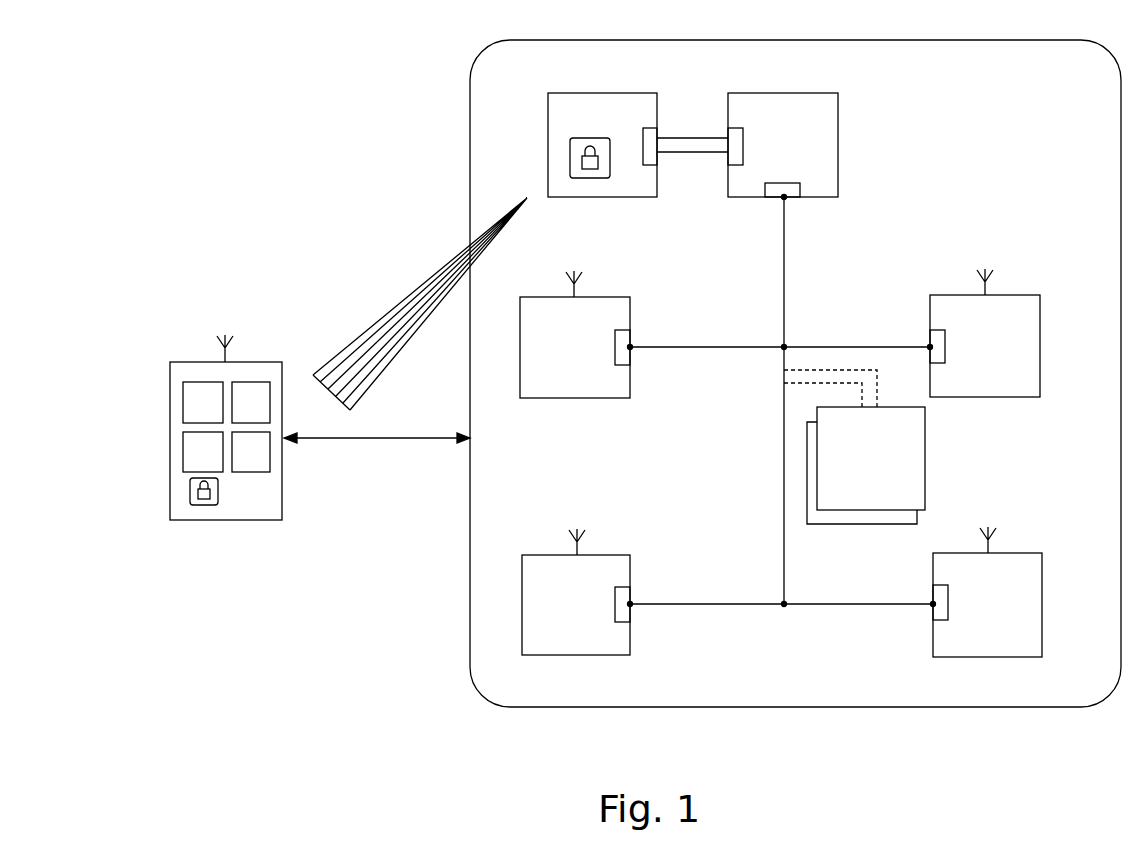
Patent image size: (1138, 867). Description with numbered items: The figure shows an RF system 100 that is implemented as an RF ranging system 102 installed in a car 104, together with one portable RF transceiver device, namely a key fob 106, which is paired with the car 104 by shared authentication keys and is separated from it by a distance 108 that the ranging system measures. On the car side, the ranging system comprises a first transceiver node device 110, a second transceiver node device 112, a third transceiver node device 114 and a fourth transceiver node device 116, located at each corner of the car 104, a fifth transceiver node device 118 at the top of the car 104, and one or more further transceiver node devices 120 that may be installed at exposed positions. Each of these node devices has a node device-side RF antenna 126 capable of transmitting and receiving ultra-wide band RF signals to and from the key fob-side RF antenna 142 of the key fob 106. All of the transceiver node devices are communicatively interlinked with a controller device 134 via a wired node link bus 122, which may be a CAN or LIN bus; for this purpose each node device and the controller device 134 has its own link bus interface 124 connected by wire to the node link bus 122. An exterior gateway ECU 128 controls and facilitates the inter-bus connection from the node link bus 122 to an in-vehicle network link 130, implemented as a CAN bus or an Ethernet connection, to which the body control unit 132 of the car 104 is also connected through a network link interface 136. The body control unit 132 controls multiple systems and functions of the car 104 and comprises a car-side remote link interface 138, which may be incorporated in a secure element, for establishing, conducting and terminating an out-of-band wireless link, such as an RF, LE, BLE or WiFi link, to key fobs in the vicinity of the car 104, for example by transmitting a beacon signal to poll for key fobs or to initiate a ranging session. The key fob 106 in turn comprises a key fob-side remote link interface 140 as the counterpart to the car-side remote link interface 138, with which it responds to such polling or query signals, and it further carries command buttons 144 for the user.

The RF system 100 is at (228, 124).
The RF ranging system 102 is at (426, 228).
The car 104 is at (470, 102).
The key fob 106 is at (201, 455).
The distance 108 is at (357, 440).
The first transceiver node device 110 is at (548, 398).
The second transceiver node device 112 is at (553, 655).
The third transceiver node device 114 is at (1010, 657).
The fourth transceiver node device 116 is at (997, 397).
The fifth transceiver node device 118 is at (917, 510).
The further transceiver node device 120 is at (875, 524).
The node link bus 122 is at (841, 383).
The link bus interface 124 is at (615, 345).
The RF antenna 126 is at (580, 282).
The exterior gateway ECU 128 is at (800, 197).
The network link 130 is at (690, 145).
The body control unit 132 is at (560, 197).
The controller device 134 is at (668, 122).
The network link interface 136 is at (650, 128).
The car-side remote link interface 138 is at (590, 138).
The key fob-side remote link interface 140 is at (214, 520).
The RF antenna 142 is at (231, 352).
The command button 144 is at (118, 490).